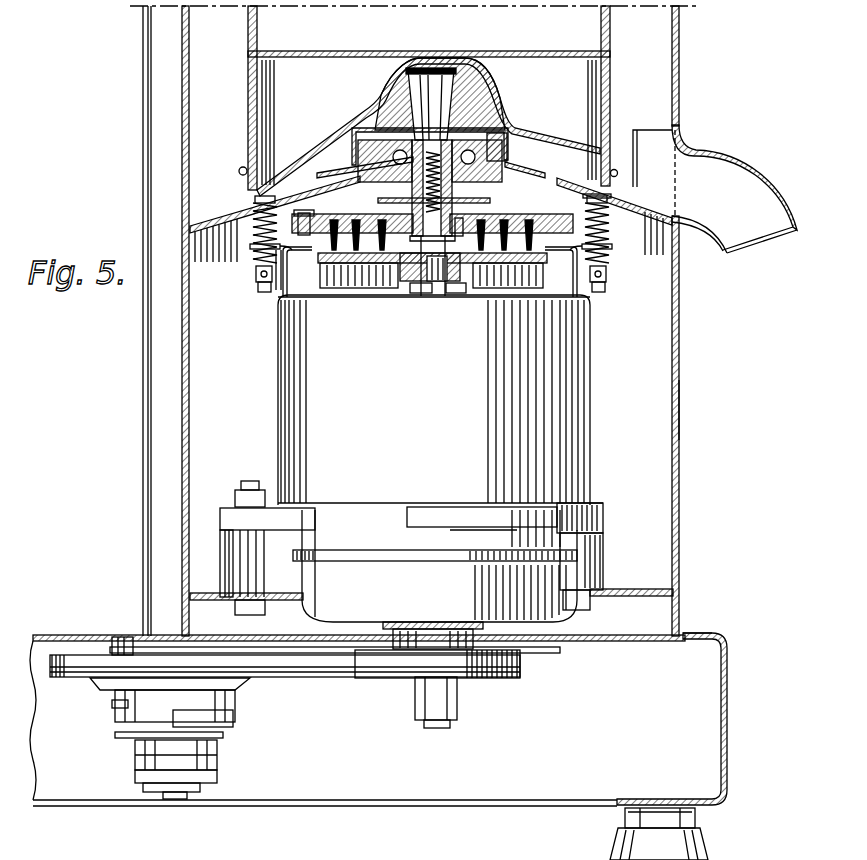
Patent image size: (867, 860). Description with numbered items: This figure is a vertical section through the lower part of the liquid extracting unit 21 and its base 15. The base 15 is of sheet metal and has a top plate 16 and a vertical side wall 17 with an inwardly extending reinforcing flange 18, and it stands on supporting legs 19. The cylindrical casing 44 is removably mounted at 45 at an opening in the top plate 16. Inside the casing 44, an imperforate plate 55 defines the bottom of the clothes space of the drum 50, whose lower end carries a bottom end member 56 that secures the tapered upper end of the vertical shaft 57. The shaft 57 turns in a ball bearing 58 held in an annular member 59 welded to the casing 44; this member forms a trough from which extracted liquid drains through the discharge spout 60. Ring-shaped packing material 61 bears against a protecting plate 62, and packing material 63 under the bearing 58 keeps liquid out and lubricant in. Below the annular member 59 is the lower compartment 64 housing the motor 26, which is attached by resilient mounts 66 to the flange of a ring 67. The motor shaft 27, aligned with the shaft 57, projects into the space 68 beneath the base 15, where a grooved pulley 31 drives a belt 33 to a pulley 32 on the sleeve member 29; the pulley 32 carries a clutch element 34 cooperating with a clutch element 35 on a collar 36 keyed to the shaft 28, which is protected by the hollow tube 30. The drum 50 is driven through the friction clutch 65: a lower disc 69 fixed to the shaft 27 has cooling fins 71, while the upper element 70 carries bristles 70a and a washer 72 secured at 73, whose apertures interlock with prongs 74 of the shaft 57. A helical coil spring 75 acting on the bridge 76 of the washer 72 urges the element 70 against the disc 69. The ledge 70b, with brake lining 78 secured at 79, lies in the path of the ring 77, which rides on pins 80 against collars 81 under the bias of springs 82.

The base 15 is at (720, 632).
The top plate 16 is at (78, 635).
The vertical side wall 17 is at (730, 706).
The reinforcing flange 18 is at (648, 800).
The supporting legs 19 is at (706, 850).
The liquid extracting unit 21 is at (684, 351).
The motor 26 is at (290, 419).
The motor shaft 27 is at (433, 282).
The shaft 28 is at (177, 800).
The sleeve member 29 is at (129, 637).
The hollow tube 30 is at (150, 458).
The grooved pulley 31 is at (500, 677).
The grooved pulley 32 is at (293, 668).
The belt 33 is at (336, 667).
The clutch element 34 is at (118, 711).
The clutch element 35 is at (118, 739).
The collar 36 is at (218, 762).
The casing 44 is at (681, 419).
The mounting 45 is at (684, 631).
The drum 50 is at (612, 29).
The imperforate plate 55 is at (566, 52).
The bottom end member 56 is at (320, 120).
The vertical shaft 57 is at (441, 52).
The ball bearing 58 is at (387, 168).
The annular member 59 is at (240, 208).
The discharge spout 60 is at (727, 157).
The packing material 61 is at (511, 137).
The protecting plate 62 is at (494, 132).
The packing material 63 is at (470, 182).
The lower compartment 64 is at (615, 510).
The friction clutch 65 is at (548, 212).
The mounts 66 is at (228, 510).
The ring 67 is at (208, 601).
The space 68 is at (325, 766).
The lower clutch element 69 is at (556, 265).
The upper clutch element 70 is at (507, 220).
The bristles 70a is at (358, 266).
The ledge 70b is at (600, 198).
The fins 71 is at (322, 273).
The washer 72 is at (408, 203).
The securing means 73 is at (457, 290).
The prongs 74 is at (416, 270).
The helical coil spring 75 is at (465, 224).
The bridge 76 is at (420, 290).
The ring 77 is at (276, 286).
The brake lining 78 is at (256, 238).
The securing means 79 is at (304, 222).
The pins 80 is at (258, 291).
The collars 81 is at (255, 277).
The helical coil spring 82 is at (268, 245).